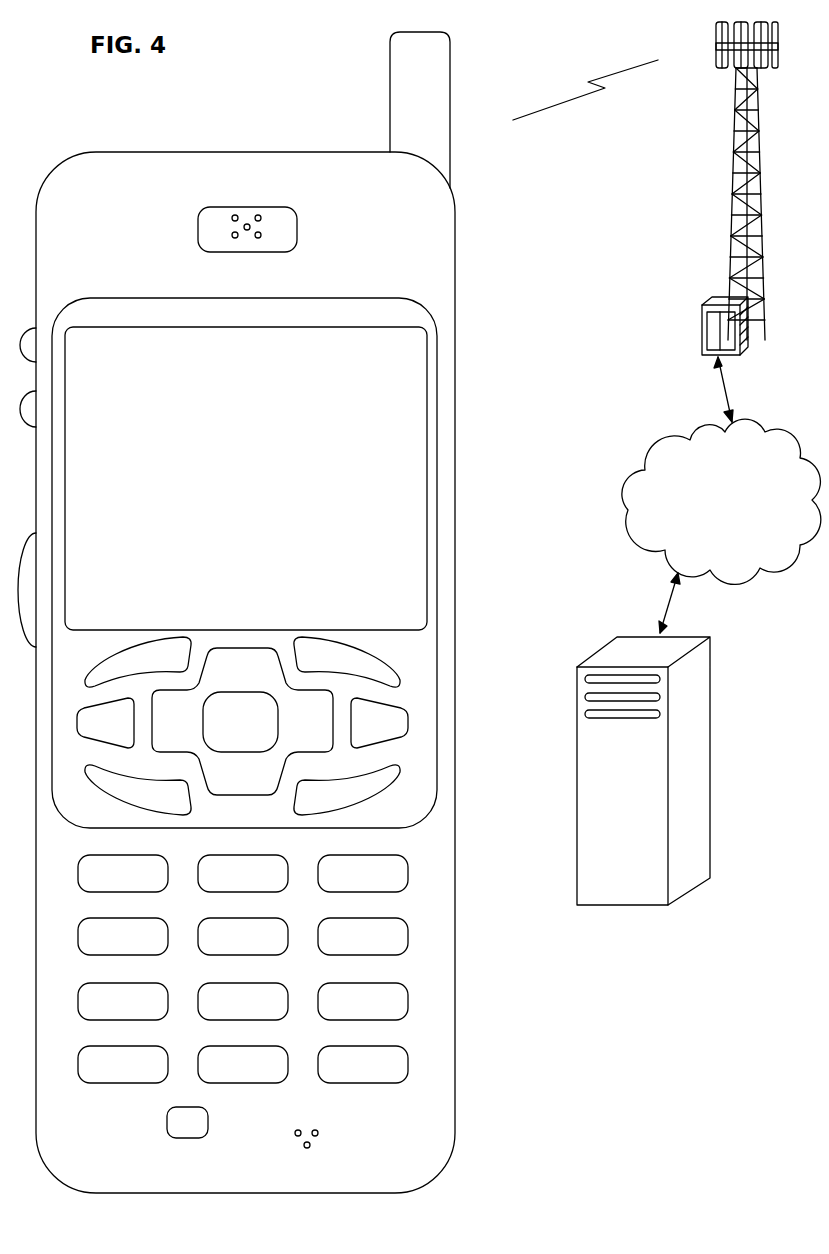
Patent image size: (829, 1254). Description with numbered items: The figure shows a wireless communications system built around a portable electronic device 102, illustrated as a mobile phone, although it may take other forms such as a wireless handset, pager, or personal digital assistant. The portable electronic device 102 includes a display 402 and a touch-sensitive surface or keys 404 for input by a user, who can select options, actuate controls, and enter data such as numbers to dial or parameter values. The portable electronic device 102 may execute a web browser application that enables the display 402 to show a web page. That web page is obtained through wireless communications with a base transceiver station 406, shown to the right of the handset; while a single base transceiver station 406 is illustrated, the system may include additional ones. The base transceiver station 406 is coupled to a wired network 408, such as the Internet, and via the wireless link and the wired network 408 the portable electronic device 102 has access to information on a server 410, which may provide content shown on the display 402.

The portable electronic device 102 is at (86, 1192).
The display 402 is at (436, 341).
The keys 404 is at (462, 1090).
The base transceiver station 406 is at (732, 203).
The wired network 408 is at (653, 551).
The server 410 is at (626, 905).